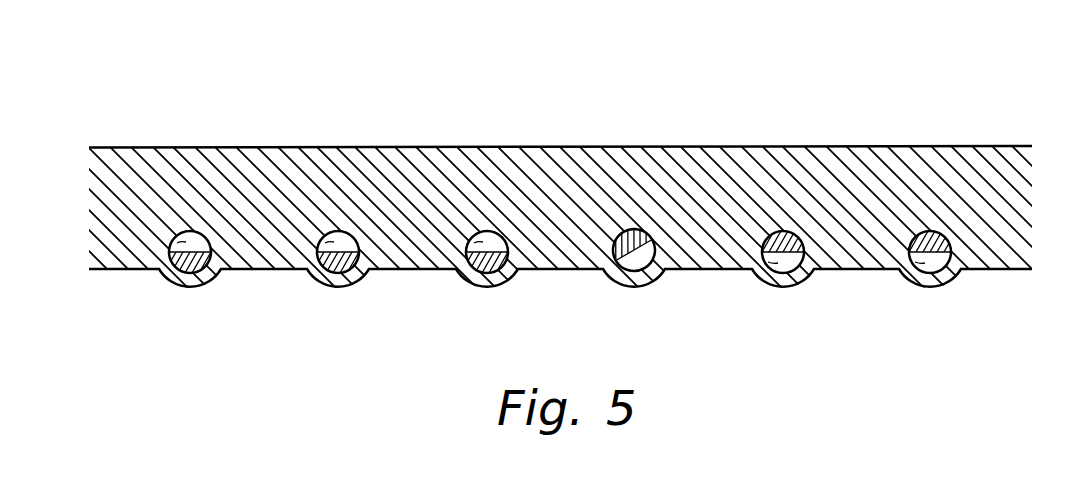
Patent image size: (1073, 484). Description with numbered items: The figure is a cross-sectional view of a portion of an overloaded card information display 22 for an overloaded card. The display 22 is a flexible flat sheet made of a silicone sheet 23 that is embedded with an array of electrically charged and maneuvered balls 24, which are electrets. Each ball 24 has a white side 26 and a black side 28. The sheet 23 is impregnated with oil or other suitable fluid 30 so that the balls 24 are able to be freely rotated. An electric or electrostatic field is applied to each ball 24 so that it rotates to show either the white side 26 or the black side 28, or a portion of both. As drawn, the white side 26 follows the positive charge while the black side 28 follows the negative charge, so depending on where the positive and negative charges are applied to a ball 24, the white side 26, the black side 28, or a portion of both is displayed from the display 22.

The overloaded card information display 22 is at (136, 82).
The silicone sheet 23 is at (957, 147).
The electrically charged and maneuvered balls 24 is at (684, 243).
The white side 26 is at (535, 257).
The black side 28 is at (546, 252).
The oil or other suitable fluid 30 is at (188, 162).